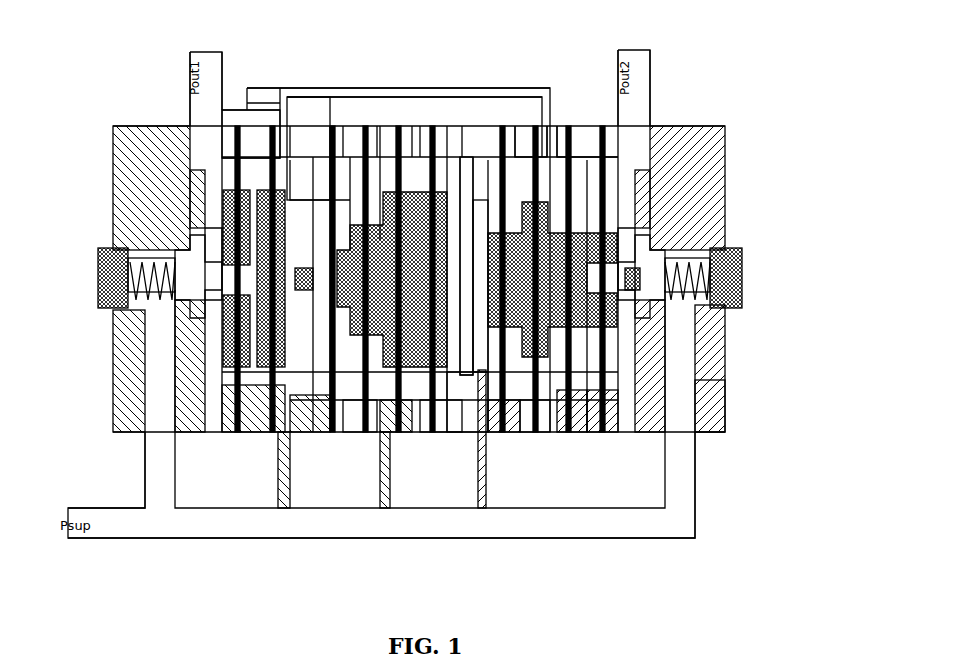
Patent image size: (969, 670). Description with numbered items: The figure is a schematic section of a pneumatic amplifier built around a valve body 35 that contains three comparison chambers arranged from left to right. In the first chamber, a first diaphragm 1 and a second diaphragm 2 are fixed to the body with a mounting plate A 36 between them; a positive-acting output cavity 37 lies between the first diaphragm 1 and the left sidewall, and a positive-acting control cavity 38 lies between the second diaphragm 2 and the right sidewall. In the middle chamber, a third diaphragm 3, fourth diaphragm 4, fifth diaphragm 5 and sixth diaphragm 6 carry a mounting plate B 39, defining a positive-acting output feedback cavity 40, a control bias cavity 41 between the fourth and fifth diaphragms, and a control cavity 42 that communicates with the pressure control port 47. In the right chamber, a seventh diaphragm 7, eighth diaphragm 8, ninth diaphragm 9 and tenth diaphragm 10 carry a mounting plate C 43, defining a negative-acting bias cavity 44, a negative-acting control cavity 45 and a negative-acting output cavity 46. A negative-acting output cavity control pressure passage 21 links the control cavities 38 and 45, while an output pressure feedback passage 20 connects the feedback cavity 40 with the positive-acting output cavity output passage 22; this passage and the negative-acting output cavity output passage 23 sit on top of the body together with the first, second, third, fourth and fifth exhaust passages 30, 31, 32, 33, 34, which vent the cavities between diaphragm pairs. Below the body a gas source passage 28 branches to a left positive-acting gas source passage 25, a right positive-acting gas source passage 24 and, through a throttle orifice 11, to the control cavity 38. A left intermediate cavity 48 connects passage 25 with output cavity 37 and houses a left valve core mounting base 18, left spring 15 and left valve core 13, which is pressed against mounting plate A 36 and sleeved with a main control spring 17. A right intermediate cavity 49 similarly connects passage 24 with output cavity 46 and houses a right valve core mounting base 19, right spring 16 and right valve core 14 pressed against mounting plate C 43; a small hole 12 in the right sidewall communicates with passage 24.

The first diaphragm 1 is at (233, 440).
The second diaphragm 2 is at (272, 433).
The third diaphragm 3 is at (350, 433).
The fourth diaphragm 4 is at (368, 433).
The fifth diaphragm 5 is at (395, 433).
The sixth diaphragm 6 is at (435, 433).
The seventh diaphragm 7 is at (500, 433).
The eighth diaphragm 8 is at (540, 433).
The ninth diaphragm 9 is at (580, 433).
The tenth diaphragm 10 is at (615, 433).
The throttle orifice 11 is at (283, 462).
The small hole 12 is at (740, 420).
The left valve core 13 is at (147, 313).
The right valve core 14 is at (700, 307).
The left spring 15 is at (113, 305).
The right spring 16 is at (730, 307).
The main control spring 17 is at (115, 218).
The left valve core mounting base 18 is at (103, 268).
The right valve core mounting base 19 is at (740, 267).
The output pressure feedback passage 20 is at (257, 103).
The negative-acting output cavity control pressure passage 21 is at (342, 90).
The positive-acting output cavity output passage 22 is at (200, 120).
The negative-acting output cavity output passage 23 is at (650, 118).
The right positive-acting gas source passage 24 is at (677, 428).
The left positive-acting gas source passage 25 is at (157, 415).
The gas source passage 28 is at (385, 527).
The first exhaust passage 30 is at (248, 103).
The second exhaust passage 31 is at (343, 173).
The third exhaust passage 32 is at (418, 190).
The fourth exhaust passage 33 is at (527, 130).
The fifth exhaust passage 34 is at (587, 127).
The valve body 35 is at (728, 143).
The mounting plate A 36 is at (222, 212).
The positive-acting output cavity 37 is at (213, 165).
The positive-acting control cavity 38 is at (287, 178).
The mounting plate B 39 is at (473, 183).
The positive-acting output feedback cavity 40 is at (348, 470).
The control bias cavity 41 is at (397, 495).
The control cavity 42 is at (450, 435).
The mounting plate C 43 is at (555, 435).
The negative-acting bias cavity 44 is at (483, 440).
The negative-acting control cavity 45 is at (667, 128).
The negative-acting output cavity 46 is at (693, 217).
The pressure control port 47 is at (445, 440).
The left intermediate cavity 48 is at (100, 250).
The right intermediate cavity 49 is at (727, 240).